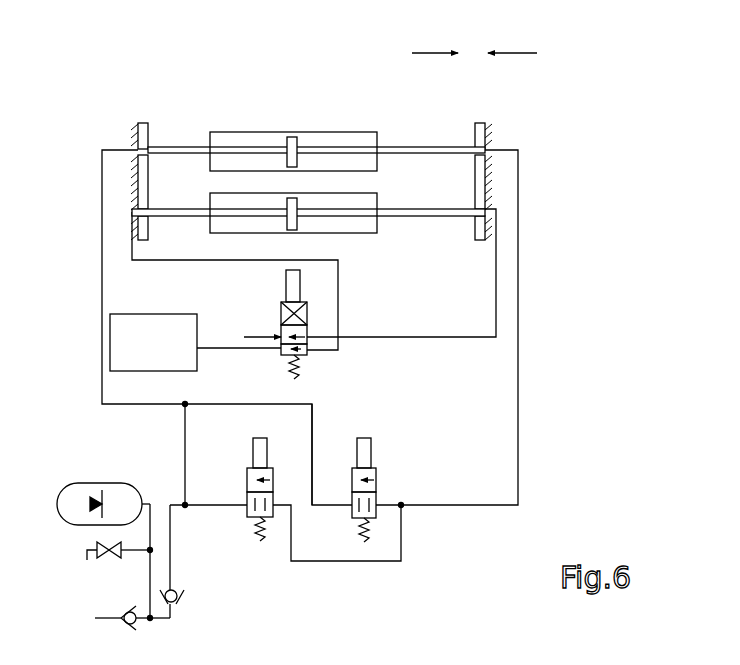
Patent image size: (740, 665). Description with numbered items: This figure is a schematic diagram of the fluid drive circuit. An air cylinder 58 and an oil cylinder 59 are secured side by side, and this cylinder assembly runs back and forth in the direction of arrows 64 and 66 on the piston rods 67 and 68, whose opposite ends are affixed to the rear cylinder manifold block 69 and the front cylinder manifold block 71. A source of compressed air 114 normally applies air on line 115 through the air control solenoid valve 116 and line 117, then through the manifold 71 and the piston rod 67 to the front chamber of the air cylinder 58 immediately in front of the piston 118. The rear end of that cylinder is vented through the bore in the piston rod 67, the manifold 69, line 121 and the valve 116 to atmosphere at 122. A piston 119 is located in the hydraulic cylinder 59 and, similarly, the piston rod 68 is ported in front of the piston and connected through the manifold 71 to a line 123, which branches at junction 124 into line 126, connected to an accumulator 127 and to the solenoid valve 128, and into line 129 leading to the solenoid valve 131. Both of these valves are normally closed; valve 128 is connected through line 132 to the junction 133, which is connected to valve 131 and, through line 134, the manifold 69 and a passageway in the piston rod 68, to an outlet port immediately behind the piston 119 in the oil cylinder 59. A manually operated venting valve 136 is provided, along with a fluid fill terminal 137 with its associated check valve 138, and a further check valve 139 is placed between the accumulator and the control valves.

The air cylinder 58 is at (375, 233).
The oil cylinder 59 is at (325, 132).
The arrow 64 is at (428, 39).
The arrow 66 is at (514, 39).
The piston rod 67 is at (160, 216).
The piston rod 68 is at (162, 148).
The rear cylinder manifold block 69 is at (488, 130).
The front cylinder manifold block 71 is at (139, 130).
The source of compressed air 114 is at (150, 314).
The line 115 is at (205, 350).
The air control solenoid valve 116 is at (281, 318).
The line 117 is at (212, 260).
The piston 118 is at (292, 230).
The piston 119 is at (292, 137).
The line 121 is at (388, 337).
The atmosphere 122 is at (244, 338).
The line 123 is at (102, 188).
The junction 124 is at (185, 405).
The line 126 is at (187, 450).
The accumulator 127 is at (110, 483).
The solenoid valve 128 is at (247, 490).
The line 129 is at (312, 420).
The solenoid valve 131 is at (376, 472).
The line 132 is at (345, 561).
The junction 133 is at (401, 505).
The line 134 is at (518, 240).
The manually operated venting valve 136 is at (111, 560).
The fluid fill terminal 137 is at (108, 622).
The check valve 138 is at (134, 626).
The check valve 139 is at (178, 600).